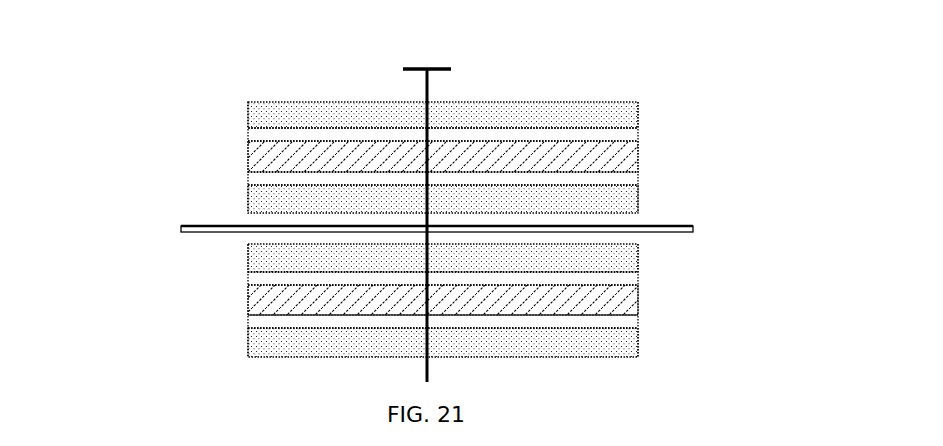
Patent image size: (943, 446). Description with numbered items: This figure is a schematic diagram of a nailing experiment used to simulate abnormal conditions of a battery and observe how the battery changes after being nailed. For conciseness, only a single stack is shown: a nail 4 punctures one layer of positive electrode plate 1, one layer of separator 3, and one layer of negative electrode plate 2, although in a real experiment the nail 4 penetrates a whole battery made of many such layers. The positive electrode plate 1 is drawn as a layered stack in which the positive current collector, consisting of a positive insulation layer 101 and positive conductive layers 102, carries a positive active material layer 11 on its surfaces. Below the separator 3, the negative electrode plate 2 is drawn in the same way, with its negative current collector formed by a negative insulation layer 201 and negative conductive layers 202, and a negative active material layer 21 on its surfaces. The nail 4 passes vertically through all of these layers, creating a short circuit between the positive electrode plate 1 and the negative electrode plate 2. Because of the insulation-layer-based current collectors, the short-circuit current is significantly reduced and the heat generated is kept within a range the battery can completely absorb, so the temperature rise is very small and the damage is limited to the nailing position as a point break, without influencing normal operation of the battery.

The positive electrode plate 1 is at (433, 134).
The positive active material layer 11 is at (615, 117).
The positive insulation layer 101 is at (250, 158).
The positive conductive layer 102 is at (615, 137).
The negative electrode plate 2 is at (436, 300).
The negative active material layer 21 is at (618, 253).
The negative insulation layer 201 is at (252, 298).
The negative conductive layer 202 is at (615, 278).
The separator 3 is at (230, 225).
The nail 4 is at (423, 87).